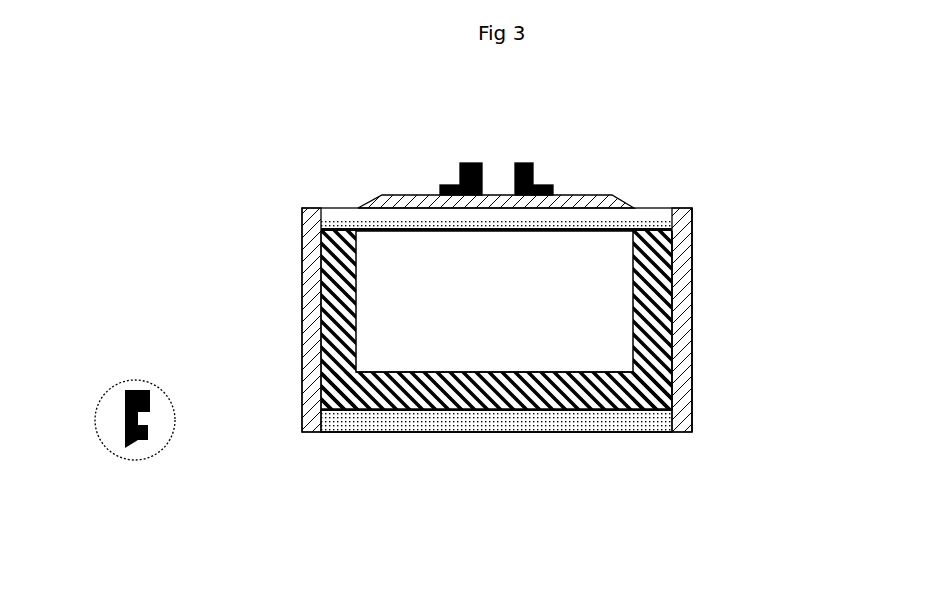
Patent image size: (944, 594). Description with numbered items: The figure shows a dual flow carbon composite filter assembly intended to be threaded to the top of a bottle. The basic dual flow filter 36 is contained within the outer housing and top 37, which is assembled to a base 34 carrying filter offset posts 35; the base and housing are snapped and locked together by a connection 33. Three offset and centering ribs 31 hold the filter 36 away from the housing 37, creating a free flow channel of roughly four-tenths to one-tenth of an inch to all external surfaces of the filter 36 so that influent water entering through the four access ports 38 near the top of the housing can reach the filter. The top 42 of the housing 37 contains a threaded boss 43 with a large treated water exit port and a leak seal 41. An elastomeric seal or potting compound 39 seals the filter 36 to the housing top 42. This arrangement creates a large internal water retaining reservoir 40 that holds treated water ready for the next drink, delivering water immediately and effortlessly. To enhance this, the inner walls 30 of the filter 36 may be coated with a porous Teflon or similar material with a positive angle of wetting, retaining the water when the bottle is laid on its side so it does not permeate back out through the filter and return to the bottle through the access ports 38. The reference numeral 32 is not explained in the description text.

The inner walls 30 is at (317, 228).
The offset and centering ribs 31 is at (320, 313).
The outer shell 32 is at (305, 353).
The connection 33 is at (300, 422).
The base 34 is at (572, 430).
The filter offset posts 35 is at (502, 425).
The dual flow filter 36 is at (692, 370).
The outer housing and top 37 is at (695, 329).
The access ports 38 is at (698, 248).
The elastomeric seal or potting compound 39 is at (693, 212).
The internal water retaining reservoir 40 is at (492, 265).
The leak seal 41 is at (557, 182).
The top 42 is at (498, 150).
The threaded boss 43 is at (457, 185).